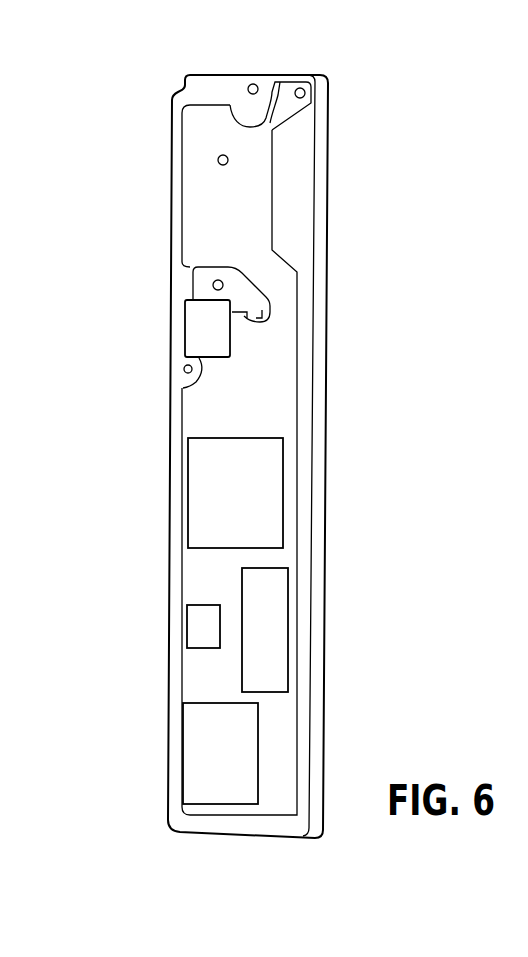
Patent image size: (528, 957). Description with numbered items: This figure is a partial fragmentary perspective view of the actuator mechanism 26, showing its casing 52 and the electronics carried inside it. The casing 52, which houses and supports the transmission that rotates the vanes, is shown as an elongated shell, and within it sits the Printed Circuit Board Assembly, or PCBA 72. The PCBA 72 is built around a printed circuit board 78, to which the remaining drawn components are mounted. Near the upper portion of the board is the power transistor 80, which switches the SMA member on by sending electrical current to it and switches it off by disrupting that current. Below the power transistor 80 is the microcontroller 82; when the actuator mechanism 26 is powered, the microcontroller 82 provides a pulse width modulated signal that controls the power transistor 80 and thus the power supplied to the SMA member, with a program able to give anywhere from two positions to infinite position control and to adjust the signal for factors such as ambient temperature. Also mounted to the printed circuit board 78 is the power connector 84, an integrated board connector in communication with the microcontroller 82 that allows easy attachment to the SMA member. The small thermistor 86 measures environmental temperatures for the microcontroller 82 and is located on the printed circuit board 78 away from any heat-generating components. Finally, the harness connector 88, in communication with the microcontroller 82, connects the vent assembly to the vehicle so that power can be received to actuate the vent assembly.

The actuator mechanism 26 is at (143, 99).
The casing 52 is at (322, 113).
The printed circuit board assembly 72 is at (302, 340).
The printed circuit board 78 is at (250, 178).
The power transistor 80 is at (195, 325).
The microcontroller 82 is at (195, 515).
The power connector 84 is at (280, 628).
The thermistor 86 is at (195, 632).
The harness connector 88 is at (190, 752).